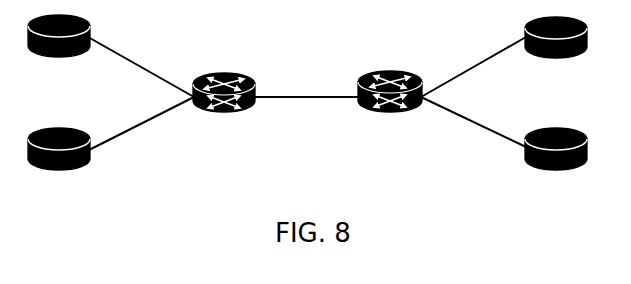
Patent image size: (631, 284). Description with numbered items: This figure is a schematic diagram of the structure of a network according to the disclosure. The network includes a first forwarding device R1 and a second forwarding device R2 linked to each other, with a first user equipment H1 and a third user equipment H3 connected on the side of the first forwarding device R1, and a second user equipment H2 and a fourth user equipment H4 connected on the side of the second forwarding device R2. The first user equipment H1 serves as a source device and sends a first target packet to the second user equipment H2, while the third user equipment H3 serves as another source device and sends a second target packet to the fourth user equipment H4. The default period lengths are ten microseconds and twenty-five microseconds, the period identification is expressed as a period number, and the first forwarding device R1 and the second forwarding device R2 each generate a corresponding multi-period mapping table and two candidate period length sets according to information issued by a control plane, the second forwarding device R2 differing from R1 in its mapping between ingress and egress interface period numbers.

The first user equipment H1 is at (59, 48).
The second user equipment H2 is at (556, 51).
The third user equipment H3 is at (59, 161).
The fourth user equipment H4 is at (556, 161).
The first forwarding device R1 is at (224, 106).
The second forwarding device R2 is at (390, 104).